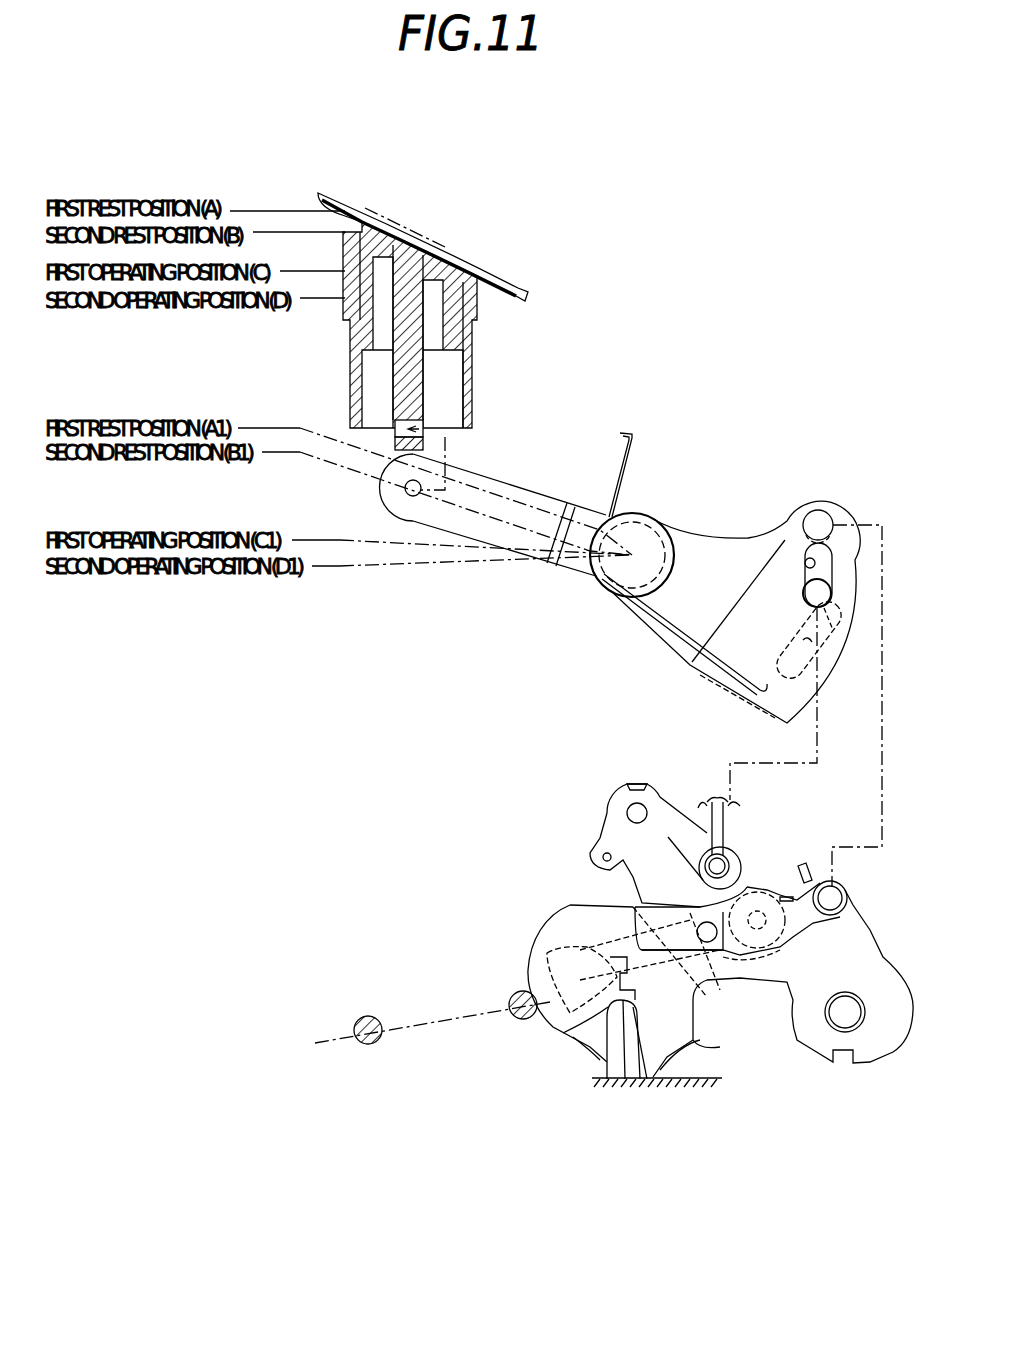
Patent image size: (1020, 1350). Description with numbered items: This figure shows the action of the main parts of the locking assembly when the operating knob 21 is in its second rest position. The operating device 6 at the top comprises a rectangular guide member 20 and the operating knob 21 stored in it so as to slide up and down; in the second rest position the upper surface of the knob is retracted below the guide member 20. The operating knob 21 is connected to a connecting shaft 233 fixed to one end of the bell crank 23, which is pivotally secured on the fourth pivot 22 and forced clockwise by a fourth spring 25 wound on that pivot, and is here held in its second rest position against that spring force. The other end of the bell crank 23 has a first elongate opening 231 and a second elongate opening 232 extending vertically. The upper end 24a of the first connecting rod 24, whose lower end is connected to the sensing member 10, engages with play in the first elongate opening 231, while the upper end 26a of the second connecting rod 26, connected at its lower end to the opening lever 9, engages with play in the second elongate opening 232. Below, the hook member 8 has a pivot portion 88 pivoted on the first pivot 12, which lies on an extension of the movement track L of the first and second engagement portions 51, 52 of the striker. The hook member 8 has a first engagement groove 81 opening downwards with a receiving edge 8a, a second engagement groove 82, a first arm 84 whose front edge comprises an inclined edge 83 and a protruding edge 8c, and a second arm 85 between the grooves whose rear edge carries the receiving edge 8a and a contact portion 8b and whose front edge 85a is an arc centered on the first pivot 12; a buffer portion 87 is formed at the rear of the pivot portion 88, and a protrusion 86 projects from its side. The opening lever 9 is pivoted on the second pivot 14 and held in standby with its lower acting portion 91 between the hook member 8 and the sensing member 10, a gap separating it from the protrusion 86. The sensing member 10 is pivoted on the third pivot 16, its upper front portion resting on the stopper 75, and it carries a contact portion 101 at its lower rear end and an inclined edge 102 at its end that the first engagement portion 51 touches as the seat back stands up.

The operating device 6 is at (432, 208).
The guide member 20 is at (473, 392).
The operating knob 21 is at (440, 252).
The fourth pivot 22 is at (676, 540).
The bell crank 23 is at (662, 512).
The connecting shaft 233 is at (406, 492).
The second elongate opening 232 is at (806, 558).
The first elongate opening 231 is at (835, 662).
The first connecting rod 24 is at (882, 833).
The upper end of the first connecting rod 24a is at (819, 510).
The fourth spring 25 is at (650, 618).
The second connecting rod 26 is at (822, 722).
The upper end of the second connecting rod 26a is at (834, 632).
The hook member 8 is at (562, 913).
The receiving edge 8a is at (627, 1080).
The contact portion 8b is at (641, 1085).
The protruding edge 8c is at (607, 1079).
The opening lever 9 is at (656, 805).
The sensing member 10 is at (853, 905).
The first pivot 12 is at (850, 1008).
The second pivot 14 is at (630, 811).
The third pivot 16 is at (757, 920).
The first engagement portion 51 is at (512, 996).
The second engagement portion 52 is at (368, 1016).
The stopper 75 is at (807, 868).
The first engagement groove 81 is at (563, 1033).
The second engagement groove 82 is at (747, 985).
The inclined edge 83 is at (553, 1018).
The first arm 84 is at (598, 1062).
The second arm 85 is at (690, 1057).
The front edge of the second arm 85a is at (662, 1071).
The protrusion 86 is at (718, 922).
The buffer portion 87 is at (797, 1042).
The pivot portion 88 is at (810, 1048).
The acting portion 91 is at (703, 987).
The contact portion 101 is at (717, 1080).
The inclined edge 102 is at (573, 1037).
The movement track L is at (443, 1010).